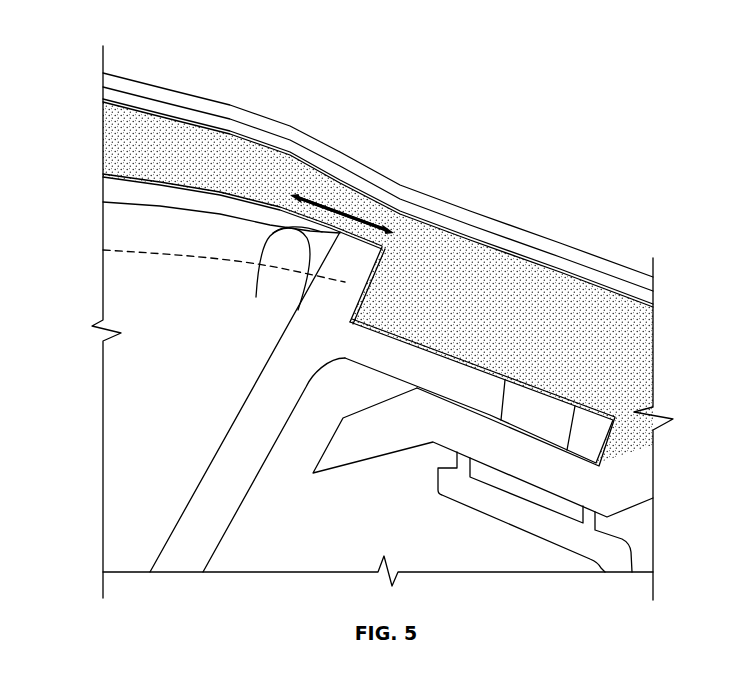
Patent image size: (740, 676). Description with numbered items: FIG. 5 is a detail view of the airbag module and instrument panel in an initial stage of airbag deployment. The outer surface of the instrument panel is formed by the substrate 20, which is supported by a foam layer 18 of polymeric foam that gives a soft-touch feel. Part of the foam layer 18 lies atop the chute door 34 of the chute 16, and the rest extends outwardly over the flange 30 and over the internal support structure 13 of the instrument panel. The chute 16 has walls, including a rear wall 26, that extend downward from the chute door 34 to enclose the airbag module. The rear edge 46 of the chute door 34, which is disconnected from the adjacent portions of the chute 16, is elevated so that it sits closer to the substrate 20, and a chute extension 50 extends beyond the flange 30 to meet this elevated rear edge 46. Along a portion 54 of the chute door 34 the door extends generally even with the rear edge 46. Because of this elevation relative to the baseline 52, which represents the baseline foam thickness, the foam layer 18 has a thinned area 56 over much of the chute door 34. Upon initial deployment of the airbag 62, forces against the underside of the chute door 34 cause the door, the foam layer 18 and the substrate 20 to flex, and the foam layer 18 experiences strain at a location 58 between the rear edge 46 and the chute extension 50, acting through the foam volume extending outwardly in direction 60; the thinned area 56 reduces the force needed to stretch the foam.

The internal support structure 13 is at (517, 453).
The chute 16 is at (290, 461).
The foam layer 18 is at (533, 285).
The substrate 20 is at (338, 163).
The rear wall 26 is at (237, 488).
The flange 30 is at (426, 373).
The chute door 34 is at (186, 196).
The rear edge 46 is at (282, 269).
The chute extension 50 is at (360, 272).
The baseline 52 is at (205, 259).
The portion 54 is at (230, 210).
The thinned area 56 is at (262, 172).
The location 58 is at (352, 213).
The direction 60 is at (372, 221).
The airbag 62 is at (160, 392).